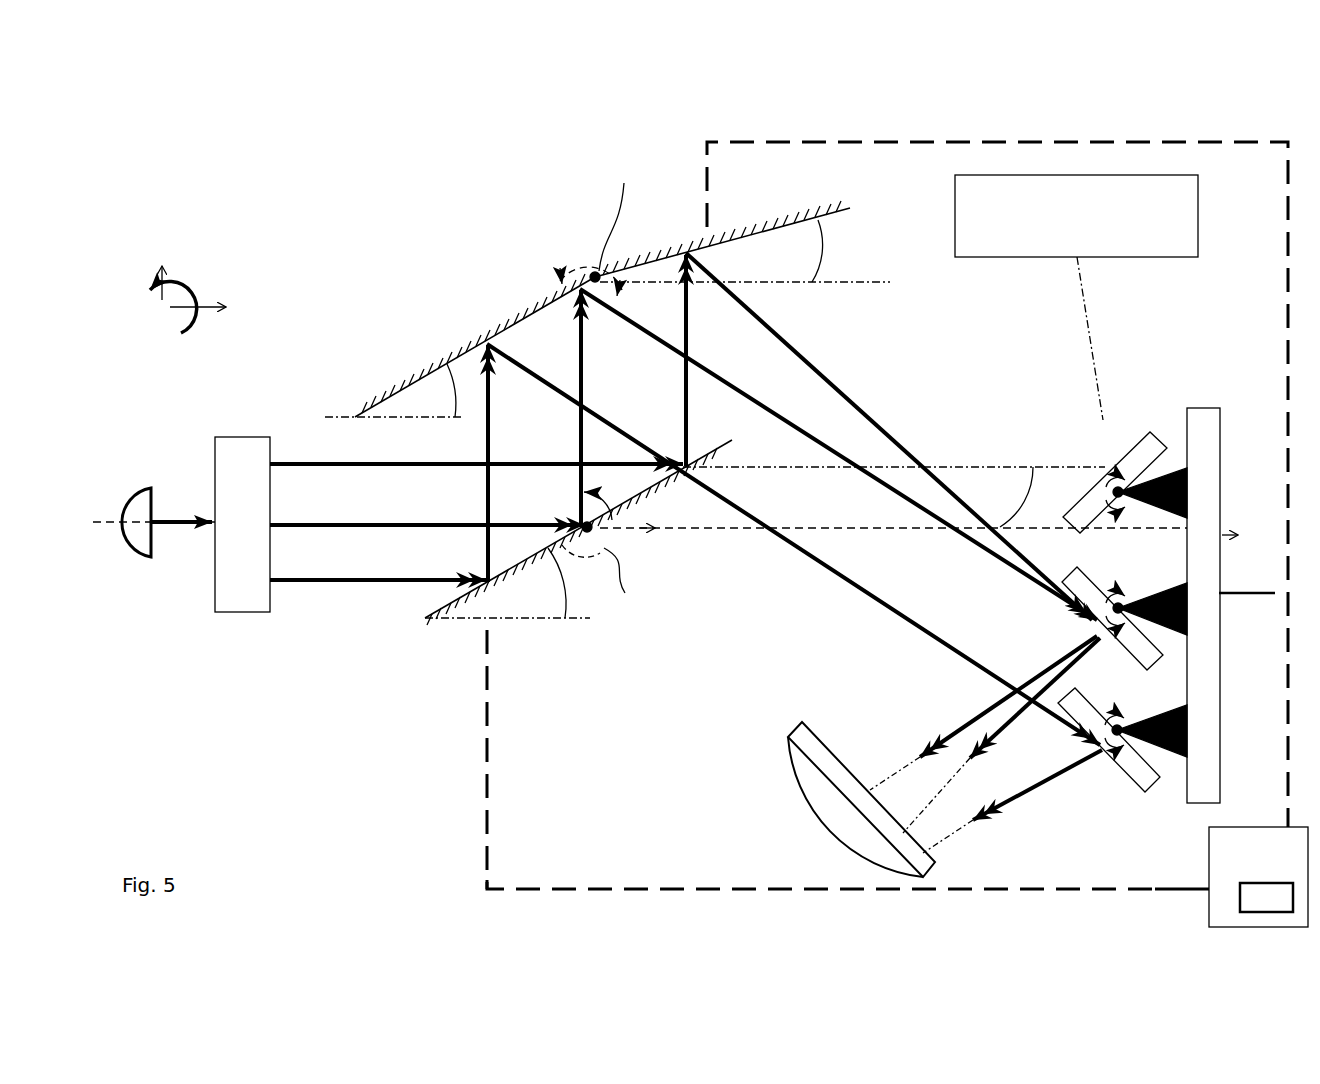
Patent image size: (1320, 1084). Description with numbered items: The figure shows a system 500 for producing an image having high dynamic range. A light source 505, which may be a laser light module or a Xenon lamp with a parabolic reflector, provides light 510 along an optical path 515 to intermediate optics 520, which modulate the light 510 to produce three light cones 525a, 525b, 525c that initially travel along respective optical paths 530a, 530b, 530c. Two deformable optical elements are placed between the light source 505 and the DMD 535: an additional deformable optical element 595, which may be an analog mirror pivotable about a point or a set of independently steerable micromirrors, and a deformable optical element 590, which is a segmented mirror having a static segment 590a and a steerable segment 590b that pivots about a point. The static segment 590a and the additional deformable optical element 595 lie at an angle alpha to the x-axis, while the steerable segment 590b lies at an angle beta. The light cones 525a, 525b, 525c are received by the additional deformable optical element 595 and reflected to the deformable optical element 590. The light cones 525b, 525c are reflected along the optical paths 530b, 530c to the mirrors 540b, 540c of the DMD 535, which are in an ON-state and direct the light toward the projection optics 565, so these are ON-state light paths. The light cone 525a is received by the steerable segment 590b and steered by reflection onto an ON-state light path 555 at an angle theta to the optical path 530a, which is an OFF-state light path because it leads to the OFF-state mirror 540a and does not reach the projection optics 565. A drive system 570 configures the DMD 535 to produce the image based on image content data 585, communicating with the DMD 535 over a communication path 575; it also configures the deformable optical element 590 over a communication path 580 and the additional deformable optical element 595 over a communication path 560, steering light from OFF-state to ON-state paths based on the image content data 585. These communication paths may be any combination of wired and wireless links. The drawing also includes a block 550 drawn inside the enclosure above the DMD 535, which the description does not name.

The system 500 is at (286, 152).
The light source 505 is at (144, 560).
The light 510 is at (190, 536).
The optical path 515 is at (102, 518).
The intermediate optics 520 is at (242, 524).
The light cone 525a is at (300, 462).
The light cone 525b is at (316, 522).
The light cone 525c is at (372, 586).
The optical path 530a is at (1046, 468).
The optical path 530b is at (888, 780).
The optical path 530c is at (973, 836).
The DMD 535 is at (1210, 400).
The mirror 540a is at (1130, 422).
The mirror 540b is at (1093, 582).
The mirror 540c is at (1160, 790).
The controller 550 is at (1076, 297).
The ON-state light path 555 is at (933, 796).
The communication path 560 is at (498, 881).
The projection optics 565 is at (812, 808).
The drive system 570 is at (1258, 877).
The communication path 575 is at (1256, 592).
The communication path 580 is at (1215, 144).
The image content data 585 is at (1266, 897).
The deformable optical element 590 is at (566, 236).
The static segment 590a is at (470, 349).
The steerable segment 590b is at (776, 220).
The additional deformable optical element 595 is at (425, 628).